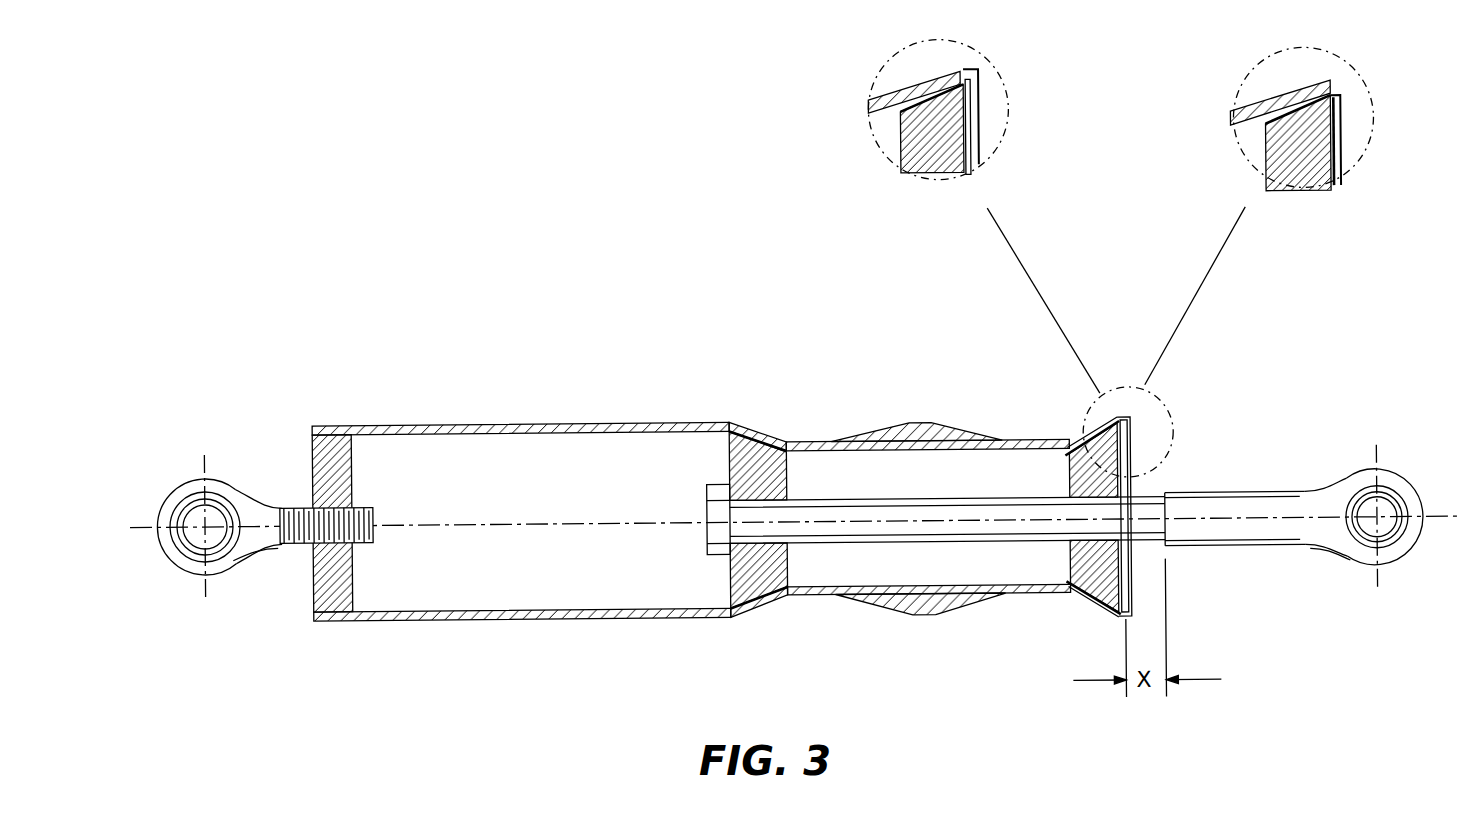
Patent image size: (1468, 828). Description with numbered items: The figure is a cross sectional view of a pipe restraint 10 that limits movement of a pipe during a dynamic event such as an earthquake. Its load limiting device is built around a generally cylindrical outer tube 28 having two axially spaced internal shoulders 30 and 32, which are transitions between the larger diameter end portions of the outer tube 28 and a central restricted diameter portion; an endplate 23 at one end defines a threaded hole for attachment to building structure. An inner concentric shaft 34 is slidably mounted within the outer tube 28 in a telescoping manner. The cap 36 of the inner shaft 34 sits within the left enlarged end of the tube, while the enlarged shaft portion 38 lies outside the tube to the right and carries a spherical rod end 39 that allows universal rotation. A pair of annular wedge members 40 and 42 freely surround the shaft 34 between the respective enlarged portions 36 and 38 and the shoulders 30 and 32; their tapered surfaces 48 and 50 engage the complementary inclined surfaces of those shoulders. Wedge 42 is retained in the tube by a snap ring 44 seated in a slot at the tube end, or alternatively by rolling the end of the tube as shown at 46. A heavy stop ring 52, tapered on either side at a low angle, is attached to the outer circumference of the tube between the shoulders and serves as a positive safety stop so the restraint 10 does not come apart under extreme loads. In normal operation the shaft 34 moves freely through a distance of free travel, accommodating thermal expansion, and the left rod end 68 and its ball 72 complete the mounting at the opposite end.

The pipe restraint 10 is at (545, 643).
The endplate 23 is at (322, 592).
The outer tube 28 is at (603, 429).
The internal shoulder 30 is at (751, 619).
The internal shoulder 32 is at (1090, 605).
The inner concentric shaft 34 is at (918, 537).
The cap 36 is at (713, 559).
The enlarged shaft portion 38 is at (1180, 540).
The spherical rod end 39 is at (1314, 545).
The annular wedge member 40 is at (787, 508).
The annular wedge member 42 is at (1077, 570).
The snap ring 44 is at (1165, 441).
The rolled end of tube 46 is at (1344, 103).
The tapered surface 48 is at (770, 457).
The tapered surface 50 is at (1080, 459).
The stop ring 52 is at (910, 431).
The rod end bearing 68 is at (219, 523).
The ball 72 is at (226, 500).